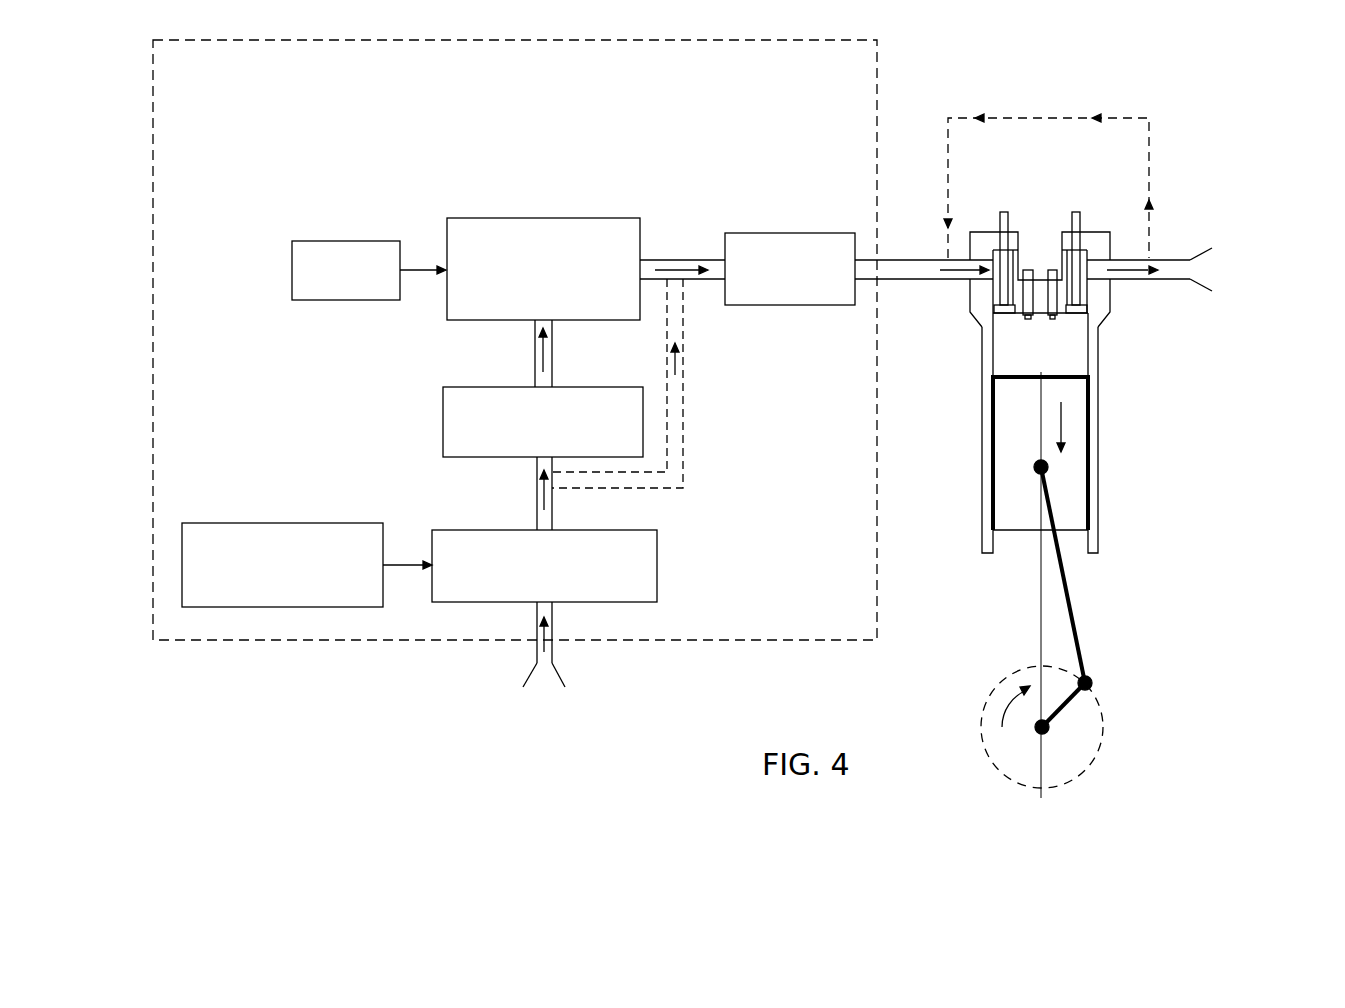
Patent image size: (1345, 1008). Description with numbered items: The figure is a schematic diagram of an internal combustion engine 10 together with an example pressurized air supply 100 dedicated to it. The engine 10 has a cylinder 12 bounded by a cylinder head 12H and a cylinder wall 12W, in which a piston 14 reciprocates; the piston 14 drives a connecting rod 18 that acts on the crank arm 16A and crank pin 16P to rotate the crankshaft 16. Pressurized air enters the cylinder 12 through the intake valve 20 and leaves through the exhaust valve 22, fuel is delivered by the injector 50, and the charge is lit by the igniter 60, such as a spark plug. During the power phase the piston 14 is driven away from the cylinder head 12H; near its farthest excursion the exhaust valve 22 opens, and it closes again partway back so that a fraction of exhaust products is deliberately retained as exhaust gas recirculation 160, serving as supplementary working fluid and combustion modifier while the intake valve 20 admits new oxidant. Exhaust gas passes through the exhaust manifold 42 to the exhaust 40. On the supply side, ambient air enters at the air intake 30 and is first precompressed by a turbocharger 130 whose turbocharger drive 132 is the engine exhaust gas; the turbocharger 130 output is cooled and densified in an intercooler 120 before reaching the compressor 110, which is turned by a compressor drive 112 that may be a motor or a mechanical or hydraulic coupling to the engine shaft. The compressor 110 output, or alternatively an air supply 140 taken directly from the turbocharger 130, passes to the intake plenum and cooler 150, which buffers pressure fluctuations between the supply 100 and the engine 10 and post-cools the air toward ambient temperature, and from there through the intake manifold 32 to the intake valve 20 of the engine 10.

The engine 10 is at (1190, 232).
The cylinder 12 is at (1097, 472).
The cylinder head 12H is at (1092, 232).
The cylinder wall 12W is at (1103, 518).
The piston 14 is at (1018, 535).
The crankshaft 16 is at (1042, 732).
The crank arm 16A is at (1065, 705).
The crank pin 16P is at (1090, 687).
The connecting rod 18 is at (1080, 648).
The intake valve 20 is at (996, 337).
The exhaust valve 22 is at (1073, 315).
The air intake 30 is at (553, 687).
The intake manifold 32 is at (947, 280).
The exhaust 40 is at (1213, 283).
The exhaust manifold 42 is at (1172, 283).
The injector 50 is at (1052, 318).
The igniter 60 is at (1028, 268).
The pressurized air supply 100 is at (228, 95).
The compressor 110 is at (592, 218).
The compressor drive 112 is at (348, 241).
The intercooler 120 is at (443, 412).
The turbocharger 130 is at (468, 530).
The turbocharger drive 132 is at (297, 523).
The air supply from turbocharger 140 is at (683, 380).
The intake plenum and cooler 150 is at (805, 233).
The exhaust gas recirculation 160 is at (948, 133).